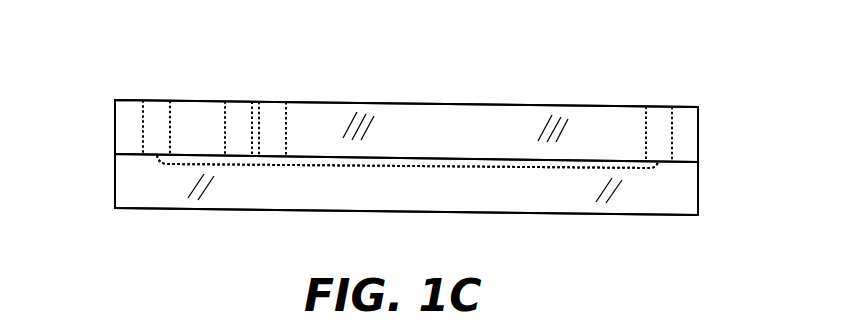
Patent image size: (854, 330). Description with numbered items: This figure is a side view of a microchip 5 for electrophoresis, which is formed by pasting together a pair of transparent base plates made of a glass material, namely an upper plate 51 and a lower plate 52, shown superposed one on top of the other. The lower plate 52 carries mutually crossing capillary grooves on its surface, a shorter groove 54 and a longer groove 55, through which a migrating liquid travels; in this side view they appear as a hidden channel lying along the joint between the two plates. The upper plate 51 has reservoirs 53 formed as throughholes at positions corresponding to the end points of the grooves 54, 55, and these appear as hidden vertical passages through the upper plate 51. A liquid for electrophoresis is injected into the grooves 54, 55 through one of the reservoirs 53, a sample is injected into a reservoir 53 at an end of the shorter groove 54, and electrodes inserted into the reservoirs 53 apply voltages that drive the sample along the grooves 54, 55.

The microchip 5 is at (96, 174).
The upper plate 51 is at (690, 133).
The lower plate 52 is at (690, 190).
The reservoirs 53 is at (225, 126).
The shorter groove 54 is at (385, 166).
The longer groove 55 is at (407, 161).